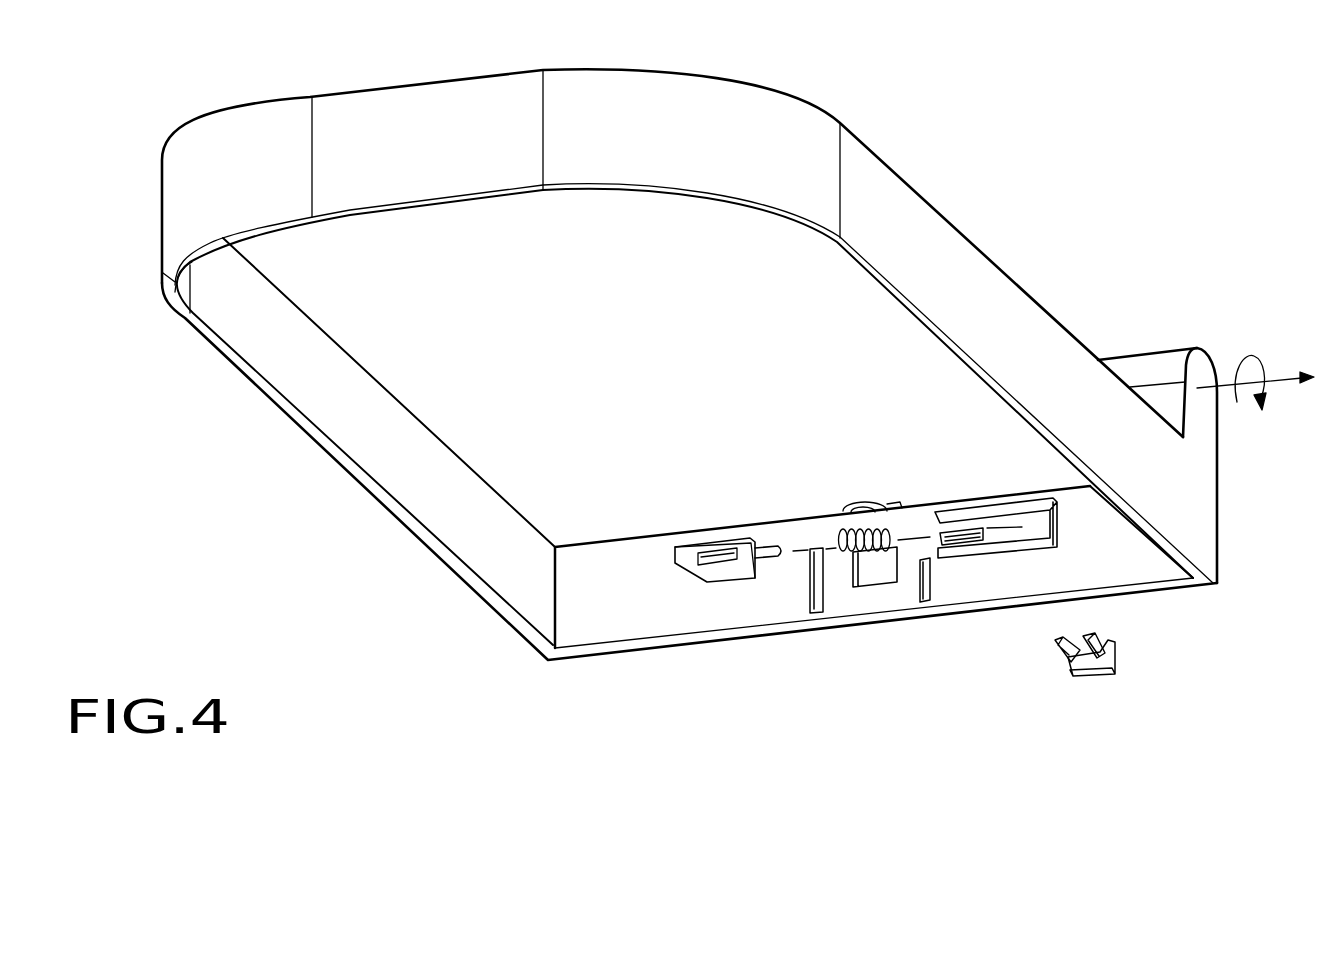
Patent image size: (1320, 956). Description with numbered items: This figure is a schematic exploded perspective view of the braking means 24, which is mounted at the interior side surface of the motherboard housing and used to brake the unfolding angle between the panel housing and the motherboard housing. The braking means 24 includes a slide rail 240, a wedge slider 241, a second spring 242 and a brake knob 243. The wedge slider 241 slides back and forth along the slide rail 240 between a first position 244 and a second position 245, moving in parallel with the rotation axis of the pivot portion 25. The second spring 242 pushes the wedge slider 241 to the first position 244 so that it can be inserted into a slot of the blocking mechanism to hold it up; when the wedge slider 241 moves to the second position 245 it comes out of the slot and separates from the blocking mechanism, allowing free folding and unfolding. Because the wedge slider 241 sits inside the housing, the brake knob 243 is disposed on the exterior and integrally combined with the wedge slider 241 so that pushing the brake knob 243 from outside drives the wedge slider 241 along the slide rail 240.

The braking means 24 is at (956, 614).
The pivot portion 25 is at (1200, 402).
The slide rail 240 is at (1010, 538).
The wedge slider 241 is at (720, 572).
The second spring 242 is at (871, 557).
The brake knob 243 is at (1083, 665).
The first position 244 is at (957, 507).
The second position 245 is at (1057, 523).